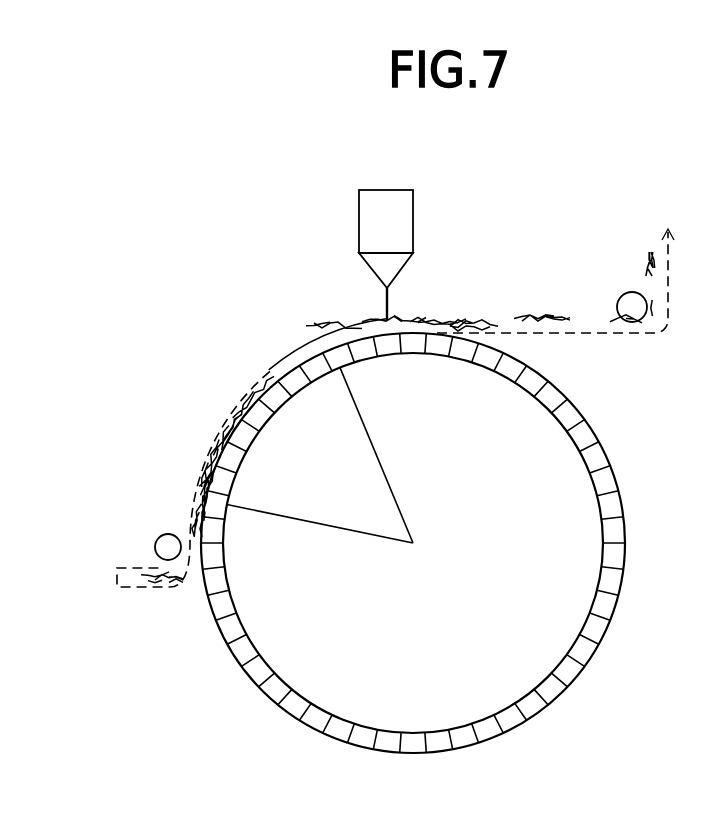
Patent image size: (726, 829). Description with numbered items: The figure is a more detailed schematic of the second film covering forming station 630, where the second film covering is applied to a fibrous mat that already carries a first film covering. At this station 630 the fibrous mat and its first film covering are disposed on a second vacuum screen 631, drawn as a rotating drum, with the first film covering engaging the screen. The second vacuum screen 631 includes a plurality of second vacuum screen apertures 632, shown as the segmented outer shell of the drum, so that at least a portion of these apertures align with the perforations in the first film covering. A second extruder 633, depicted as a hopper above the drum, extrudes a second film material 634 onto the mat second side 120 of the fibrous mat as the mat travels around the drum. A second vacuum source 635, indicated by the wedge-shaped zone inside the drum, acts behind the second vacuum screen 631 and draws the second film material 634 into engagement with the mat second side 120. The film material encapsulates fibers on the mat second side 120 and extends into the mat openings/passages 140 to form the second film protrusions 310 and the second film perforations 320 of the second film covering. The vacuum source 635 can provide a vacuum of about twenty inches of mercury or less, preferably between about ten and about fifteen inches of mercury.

The mat second side 120 is at (560, 318).
The mat openings/passages 140 is at (500, 318).
The second film protrusions 310 is at (237, 400).
The second film perforations 320 is at (212, 440).
The second film covering forming station 630 is at (258, 740).
The second vacuum screen 631 is at (606, 455).
The second vacuum screen apertures 632 is at (568, 413).
The second extruder 633 is at (413, 225).
The second film material 634 is at (380, 301).
The second vacuum source 635 is at (338, 477).